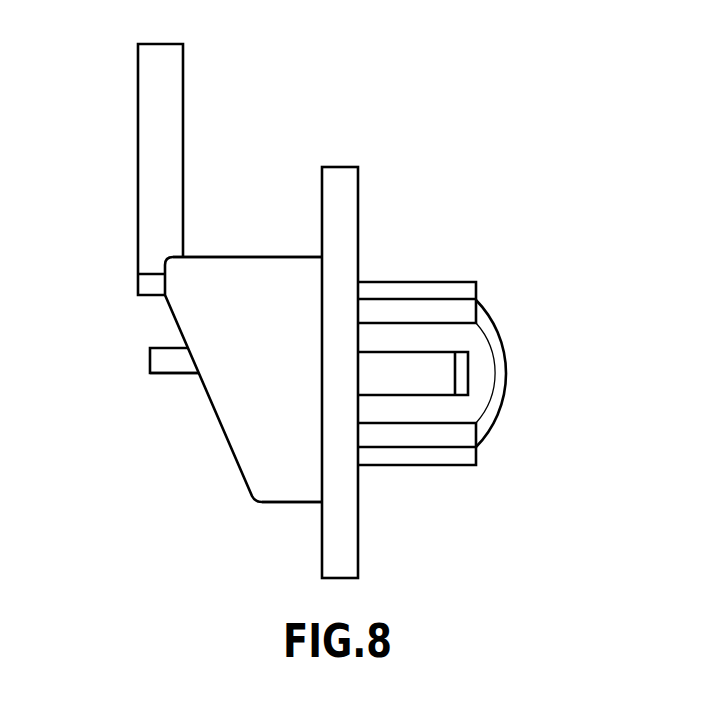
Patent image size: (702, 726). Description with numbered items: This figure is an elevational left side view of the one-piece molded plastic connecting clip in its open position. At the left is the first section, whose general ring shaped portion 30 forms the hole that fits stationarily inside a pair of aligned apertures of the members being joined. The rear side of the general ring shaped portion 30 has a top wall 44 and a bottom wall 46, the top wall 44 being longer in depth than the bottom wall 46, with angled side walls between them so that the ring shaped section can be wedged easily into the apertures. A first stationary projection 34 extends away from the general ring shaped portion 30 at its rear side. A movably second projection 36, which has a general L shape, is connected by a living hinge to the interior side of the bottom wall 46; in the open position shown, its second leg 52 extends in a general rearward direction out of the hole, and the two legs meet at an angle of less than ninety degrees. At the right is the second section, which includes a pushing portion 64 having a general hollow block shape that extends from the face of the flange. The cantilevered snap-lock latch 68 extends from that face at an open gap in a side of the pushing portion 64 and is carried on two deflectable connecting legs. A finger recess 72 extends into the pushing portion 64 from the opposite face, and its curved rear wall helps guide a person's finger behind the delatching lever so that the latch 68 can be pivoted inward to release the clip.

The general ring shaped portion 30 is at (235, 408).
The first stationary projection 34 is at (139, 110).
The movably second projection 36 is at (150, 359).
The top wall 44 is at (237, 257).
The bottom wall 46 is at (279, 505).
The second leg 52 is at (150, 373).
The pushing portion 64 is at (507, 370).
The cantilevered snap-lock latch 68 is at (468, 378).
The finger recess 72 is at (463, 342).